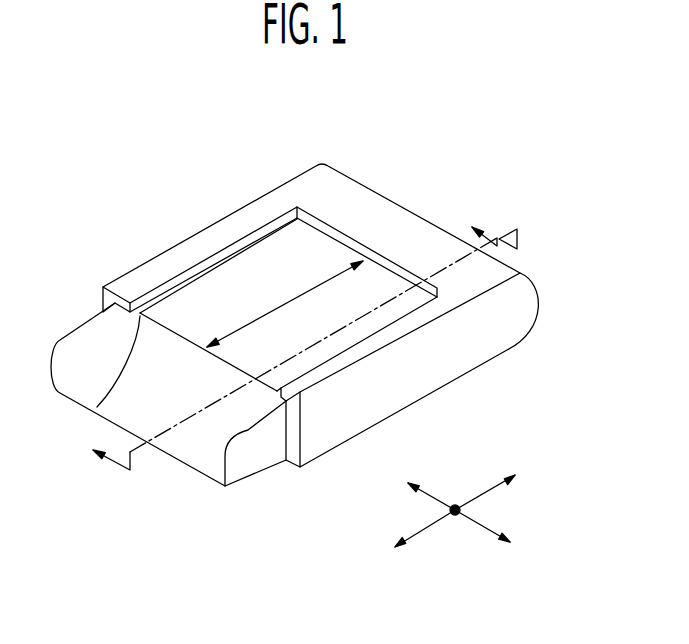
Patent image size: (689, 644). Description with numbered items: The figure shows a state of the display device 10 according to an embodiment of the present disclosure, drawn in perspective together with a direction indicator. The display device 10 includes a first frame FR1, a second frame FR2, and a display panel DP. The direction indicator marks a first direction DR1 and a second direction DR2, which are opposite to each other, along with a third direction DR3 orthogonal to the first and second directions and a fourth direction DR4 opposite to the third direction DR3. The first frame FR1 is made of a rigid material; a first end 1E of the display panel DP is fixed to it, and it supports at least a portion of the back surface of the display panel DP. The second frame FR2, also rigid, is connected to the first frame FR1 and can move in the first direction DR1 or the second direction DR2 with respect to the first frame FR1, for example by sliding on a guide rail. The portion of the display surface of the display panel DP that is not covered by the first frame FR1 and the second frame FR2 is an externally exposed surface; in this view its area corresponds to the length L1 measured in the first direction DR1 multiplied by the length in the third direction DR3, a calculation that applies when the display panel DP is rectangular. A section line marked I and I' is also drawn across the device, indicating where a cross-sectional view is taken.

The display device 10 is at (375, 150).
The first frame FR1 is at (83, 327).
The second frame FR2 is at (283, 182).
The display panel DP is at (230, 262).
The first end 1E is at (97, 407).
The length L1 is at (285, 304).
The section line I is at (291, 362).
The section line I' is at (494, 225).
The first direction DR1 is at (501, 487).
The second direction DR2 is at (400, 540).
The third direction DR3 is at (503, 538).
The fourth direction DR4 is at (413, 487).